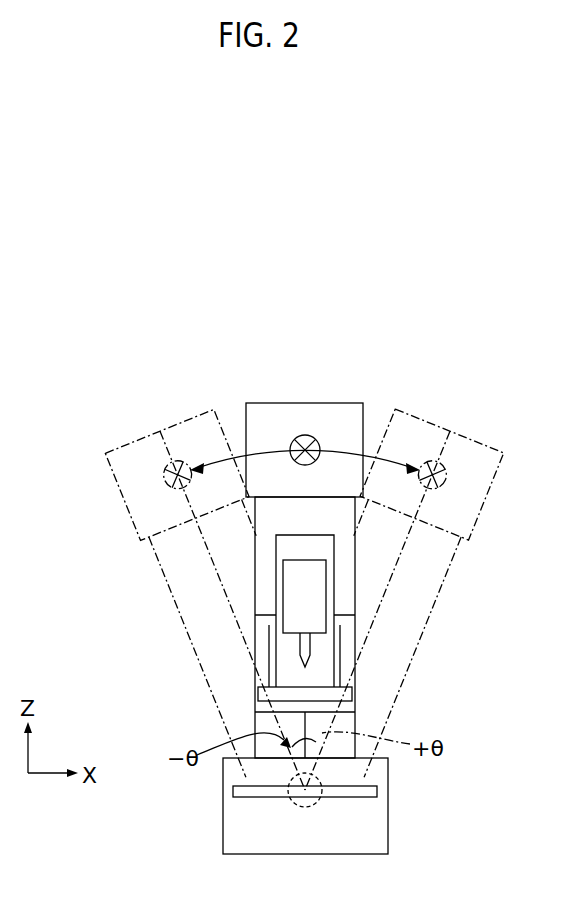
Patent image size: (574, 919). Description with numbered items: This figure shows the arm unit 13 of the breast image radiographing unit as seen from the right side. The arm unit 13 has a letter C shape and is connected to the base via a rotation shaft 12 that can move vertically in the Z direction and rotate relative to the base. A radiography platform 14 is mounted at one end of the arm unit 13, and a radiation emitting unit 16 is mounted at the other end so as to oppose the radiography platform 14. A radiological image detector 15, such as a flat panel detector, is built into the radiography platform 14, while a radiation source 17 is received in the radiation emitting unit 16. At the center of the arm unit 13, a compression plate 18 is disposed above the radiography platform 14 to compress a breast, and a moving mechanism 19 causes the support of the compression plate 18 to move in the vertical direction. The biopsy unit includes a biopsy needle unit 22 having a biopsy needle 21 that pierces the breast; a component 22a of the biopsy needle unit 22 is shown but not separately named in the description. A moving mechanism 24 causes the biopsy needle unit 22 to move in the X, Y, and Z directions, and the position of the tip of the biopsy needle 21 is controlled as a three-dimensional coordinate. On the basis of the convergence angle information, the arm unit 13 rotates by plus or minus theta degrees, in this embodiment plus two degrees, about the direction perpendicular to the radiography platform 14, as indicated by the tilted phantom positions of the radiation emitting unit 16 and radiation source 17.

The rotation shaft 12 is at (305, 809).
The arm unit 13 is at (355, 610).
The radiography platform 14 is at (388, 830).
The radiological image detector 15 is at (373, 790).
The radiation emitting unit 16 is at (262, 403).
The radiation source 17 is at (304, 435).
The compression plate 18 is at (352, 690).
The moving mechanism 19 is at (255, 640).
The biopsy needle 21 is at (310, 641).
The biopsy needle unit 22 is at (344, 605).
The container 22a is at (313, 560).
The moving mechanism 24 is at (276, 543).